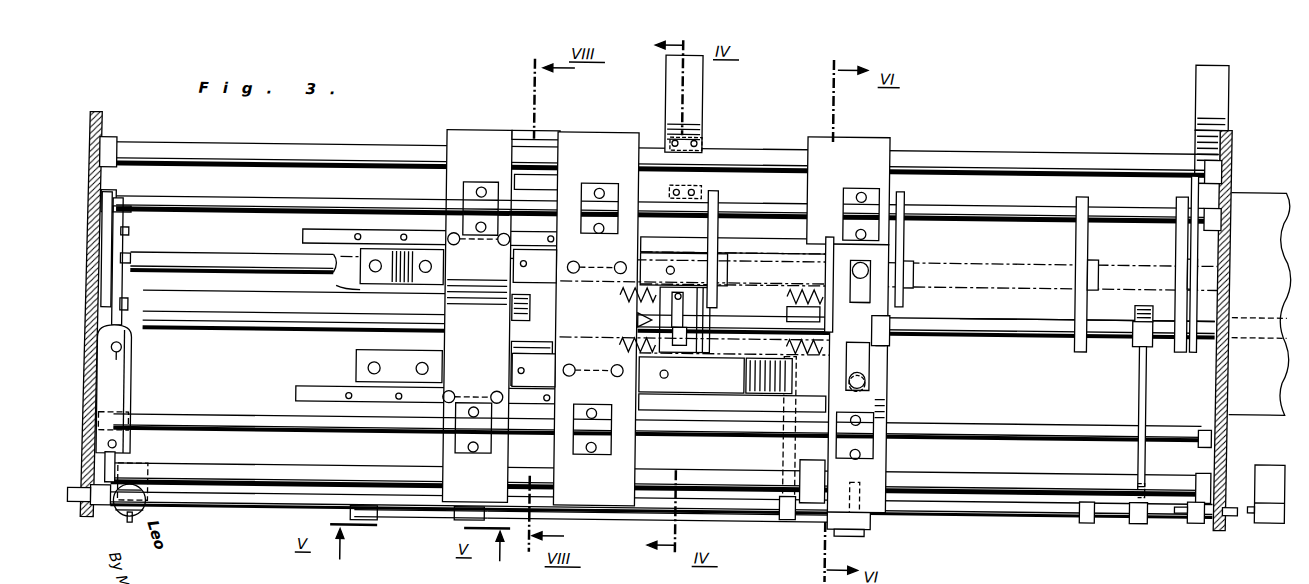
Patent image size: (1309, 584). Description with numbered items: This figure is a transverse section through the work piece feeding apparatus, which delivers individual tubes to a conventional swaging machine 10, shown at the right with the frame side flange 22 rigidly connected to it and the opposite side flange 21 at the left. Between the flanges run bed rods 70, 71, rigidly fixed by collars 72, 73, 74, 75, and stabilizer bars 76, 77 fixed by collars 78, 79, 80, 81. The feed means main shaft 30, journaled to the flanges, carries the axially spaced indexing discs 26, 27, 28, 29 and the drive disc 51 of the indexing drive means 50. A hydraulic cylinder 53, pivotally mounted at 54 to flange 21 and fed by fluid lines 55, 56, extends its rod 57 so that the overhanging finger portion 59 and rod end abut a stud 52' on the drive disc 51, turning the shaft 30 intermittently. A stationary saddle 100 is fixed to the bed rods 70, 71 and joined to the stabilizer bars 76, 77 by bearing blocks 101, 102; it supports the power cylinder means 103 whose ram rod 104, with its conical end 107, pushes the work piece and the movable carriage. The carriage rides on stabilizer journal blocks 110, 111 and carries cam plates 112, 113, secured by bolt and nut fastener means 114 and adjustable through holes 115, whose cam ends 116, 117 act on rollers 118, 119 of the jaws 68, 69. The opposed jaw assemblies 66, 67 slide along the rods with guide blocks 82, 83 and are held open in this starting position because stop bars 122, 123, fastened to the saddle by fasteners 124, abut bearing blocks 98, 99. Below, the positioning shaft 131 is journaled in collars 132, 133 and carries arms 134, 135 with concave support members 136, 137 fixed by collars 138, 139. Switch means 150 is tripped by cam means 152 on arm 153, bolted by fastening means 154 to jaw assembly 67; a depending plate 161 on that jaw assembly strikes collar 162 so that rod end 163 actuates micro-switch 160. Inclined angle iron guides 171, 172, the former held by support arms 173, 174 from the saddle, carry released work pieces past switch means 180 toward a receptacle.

The swaging machine 10 is at (1261, 287).
The apparatus frame side flange 21 is at (79, 313).
The apparatus frame side flange 22 is at (1242, 325).
The indexing disc 26 is at (741, 247).
The indexing disc 27 is at (928, 247).
The indexing disc 28 is at (1109, 270).
The indexing disc 29 is at (1158, 263).
The main shaft 30 is at (674, 261).
The indexing drive means 50 is at (167, 395).
The drive disc 51 is at (85, 249).
The stud 52' is at (154, 249).
The hydraulic cylinder 53 is at (135, 389).
The pivot mounting 54 is at (133, 473).
The hydraulic fluid line 55 is at (141, 439).
The hydraulic fluid line 56 is at (141, 347).
The rod 57 is at (145, 262).
The overhanging finger portion 59 is at (143, 228).
The jaw assembly 66 is at (862, 320).
The jaw assembly 67 is at (878, 519).
The jaw 68 is at (926, 317).
The jaw 69 is at (906, 336).
The bed rod 70 is at (659, 151).
The bed rod 71 is at (656, 470).
The collar 72 is at (127, 146).
The collar 73 is at (1190, 159).
The collar 74 is at (80, 484).
The collar 75 is at (1189, 477).
The stabilizer bar 76 is at (660, 199).
The stabilizer bar 77 is at (657, 438).
The collar 78 is at (127, 197).
The collar 79 is at (1236, 219).
The collar 80 is at (90, 416).
The collar 81 is at (1195, 424).
The guide block 82 is at (861, 201).
The guide block 83 is at (888, 435).
The bearing block 98 is at (812, 262).
The bearing block 99 is at (811, 474).
The stationary saddle 100 is at (497, 304).
The bearing block 101 is at (482, 194).
The bearing block 102 is at (474, 440).
The power cylinder means 103 is at (293, 325).
The ram rod 104 is at (504, 340).
The conical end 107 is at (620, 324).
The stabilizer journal block 110 is at (604, 189).
The stabilizer journal block 111 is at (592, 442).
The cam plate 112 is at (334, 288).
The cam plate 113 is at (376, 366).
The bolt and nut fastener means 114 is at (569, 327).
The holes 115 is at (402, 283).
The cam end 116 is at (901, 297).
The cam end 117 is at (891, 366).
The roller 118 is at (903, 273).
The roller 119 is at (892, 389).
The stop bar 122 is at (565, 237).
The stop bar 123 is at (560, 408).
The fasteners 124 is at (476, 318).
The shaft 131 is at (661, 520).
The collar 132 is at (107, 513).
The collar 133 is at (1178, 526).
The arm 134 is at (718, 376).
The arm 135 is at (1117, 422).
The work receiving support member 136 is at (721, 310).
The work receiving support member 137 is at (1126, 320).
The collar 138 is at (773, 522).
The collar 139 is at (1121, 529).
The switch means 150 is at (420, 525).
The cam means 152 is at (343, 513).
The arm 153 is at (657, 529).
The bolt fastening means 154 is at (873, 544).
The micro-switch 160 is at (1268, 508).
The depending plate 161 is at (898, 494).
The collar 162 is at (1068, 525).
The rod end 163 is at (1240, 541).
The angle iron guide 171 is at (705, 127).
The angle iron guide 172 is at (1190, 124).
The support arm 173 is at (557, 179).
The support arm 174 is at (596, 304).
The switch means 180 is at (695, 320).